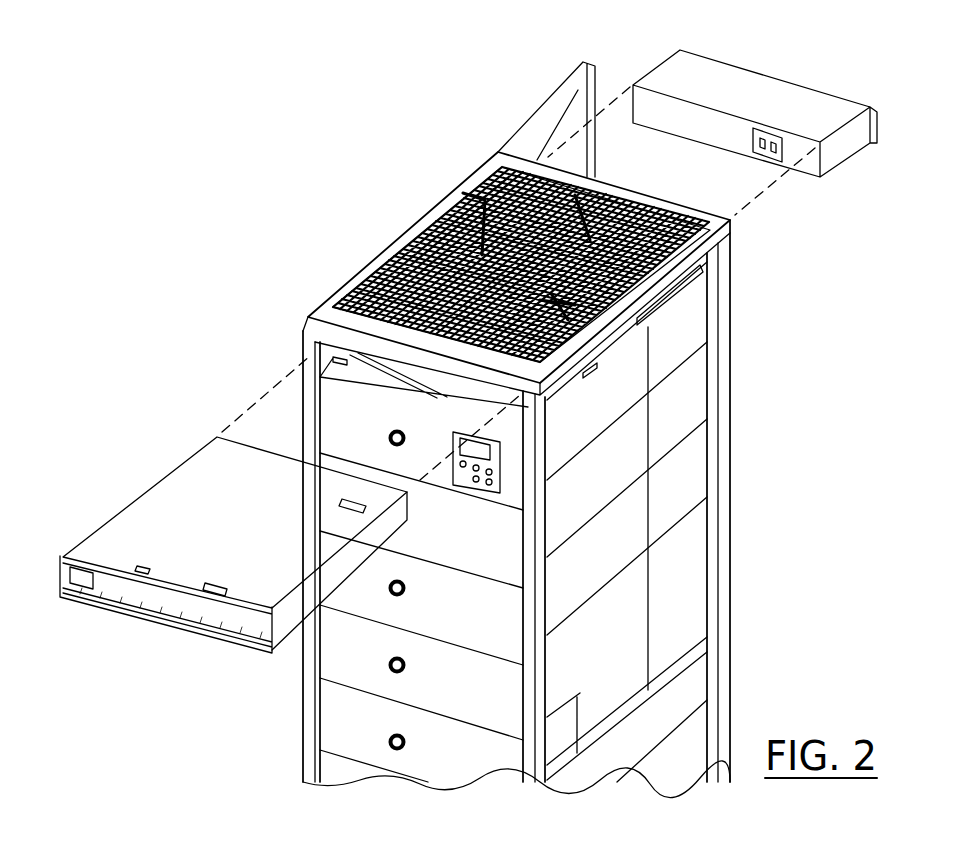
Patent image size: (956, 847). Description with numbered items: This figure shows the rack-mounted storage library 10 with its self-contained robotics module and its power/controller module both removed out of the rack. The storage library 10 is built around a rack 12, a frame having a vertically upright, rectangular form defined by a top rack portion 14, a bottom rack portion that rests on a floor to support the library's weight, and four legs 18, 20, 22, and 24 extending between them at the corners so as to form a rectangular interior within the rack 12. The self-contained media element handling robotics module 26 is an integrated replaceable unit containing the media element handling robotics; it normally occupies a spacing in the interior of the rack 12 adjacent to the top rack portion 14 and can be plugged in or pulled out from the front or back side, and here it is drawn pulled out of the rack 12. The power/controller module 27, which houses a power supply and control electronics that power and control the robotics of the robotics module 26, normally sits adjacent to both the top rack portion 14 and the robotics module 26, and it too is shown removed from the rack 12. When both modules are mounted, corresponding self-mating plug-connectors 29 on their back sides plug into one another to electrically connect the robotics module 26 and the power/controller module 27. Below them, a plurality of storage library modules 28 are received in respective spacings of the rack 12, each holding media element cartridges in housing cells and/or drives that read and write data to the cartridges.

The storage library 10 is at (790, 320).
The rack 12 is at (752, 425).
The top rack portion 14 is at (342, 272).
The leg 18 is at (307, 738).
The leg 20 is at (533, 767).
The leg 22 is at (730, 498).
The leg 24 is at (463, 193).
The self-contained media element handling robotics module 26 is at (160, 462).
The power/controller module 27 is at (624, 52).
The storage library modules 28 is at (353, 417).
The self-mating plug-connectors 29 is at (762, 155).